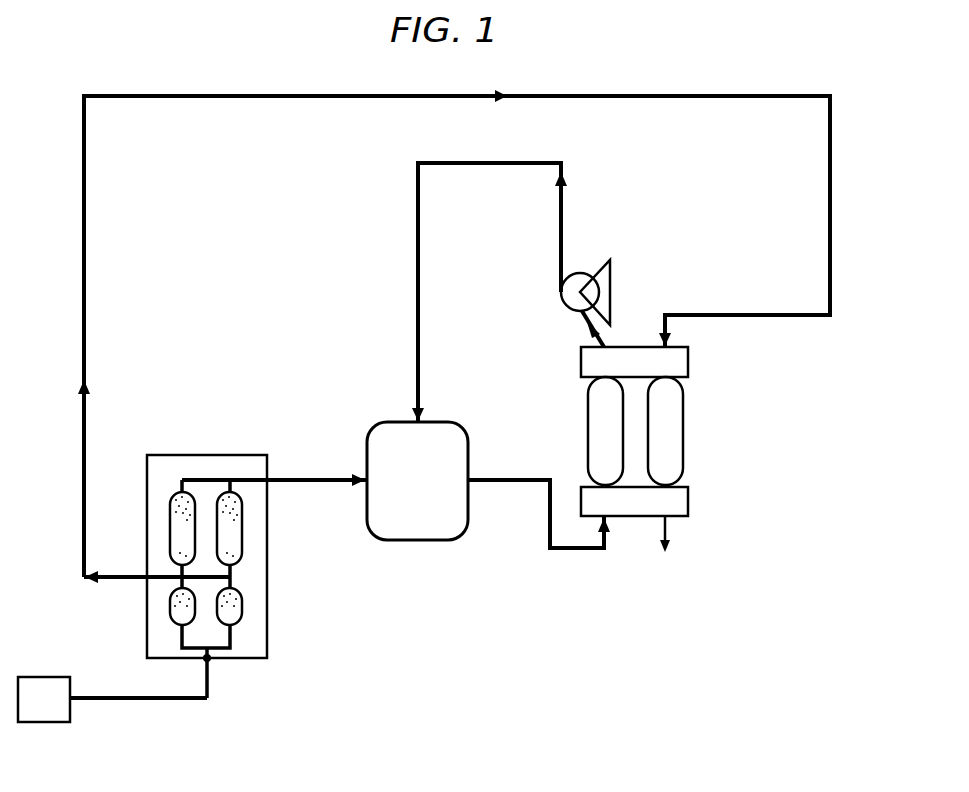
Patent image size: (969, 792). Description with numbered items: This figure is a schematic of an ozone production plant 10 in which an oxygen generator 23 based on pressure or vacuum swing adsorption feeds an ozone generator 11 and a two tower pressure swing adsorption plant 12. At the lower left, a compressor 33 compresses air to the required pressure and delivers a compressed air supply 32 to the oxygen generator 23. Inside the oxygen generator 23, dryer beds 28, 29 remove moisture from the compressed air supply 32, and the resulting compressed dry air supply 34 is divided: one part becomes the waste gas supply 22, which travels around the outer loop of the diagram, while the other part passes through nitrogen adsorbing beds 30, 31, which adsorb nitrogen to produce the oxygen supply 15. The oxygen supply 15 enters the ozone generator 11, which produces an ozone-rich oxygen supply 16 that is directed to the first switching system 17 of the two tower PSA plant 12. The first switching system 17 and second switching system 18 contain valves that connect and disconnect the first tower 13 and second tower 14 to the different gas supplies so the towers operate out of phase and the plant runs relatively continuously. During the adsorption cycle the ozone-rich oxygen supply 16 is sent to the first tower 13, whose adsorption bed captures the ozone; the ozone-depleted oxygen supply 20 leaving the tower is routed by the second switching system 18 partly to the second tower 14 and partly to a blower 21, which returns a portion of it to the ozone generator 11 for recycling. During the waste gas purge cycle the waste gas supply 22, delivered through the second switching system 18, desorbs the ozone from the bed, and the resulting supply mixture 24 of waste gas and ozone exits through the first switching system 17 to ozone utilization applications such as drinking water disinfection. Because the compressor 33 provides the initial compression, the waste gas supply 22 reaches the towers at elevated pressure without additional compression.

The ozone production plant 10 is at (588, 580).
The ozone generator 11 is at (413, 540).
The two tower pressure swing adsorption plant 12 is at (674, 429).
The first tower 13 is at (587, 421).
The second tower 14 is at (685, 421).
The oxygen supply 15 is at (305, 478).
The ozone-rich oxygen supply 16 is at (505, 478).
The first switching system 17 is at (690, 504).
The second switching system 18 is at (690, 363).
The ozone-depleted oxygen supply 20 is at (580, 322).
The blower 21 is at (612, 284).
The waste gas supply 22 is at (832, 212).
The oxygen generator 23 is at (207, 576).
The supply mixture 24 is at (670, 528).
The dryer bed 28 is at (170, 605).
The dryer bed 29 is at (242, 605).
The nitrogen adsorbing bed 30 is at (170, 540).
The nitrogen adsorbing bed 31 is at (242, 540).
The compressed air supply 32 is at (137, 698).
The compressor 33 is at (43, 677).
The compressed dry air supply 34 is at (232, 569).